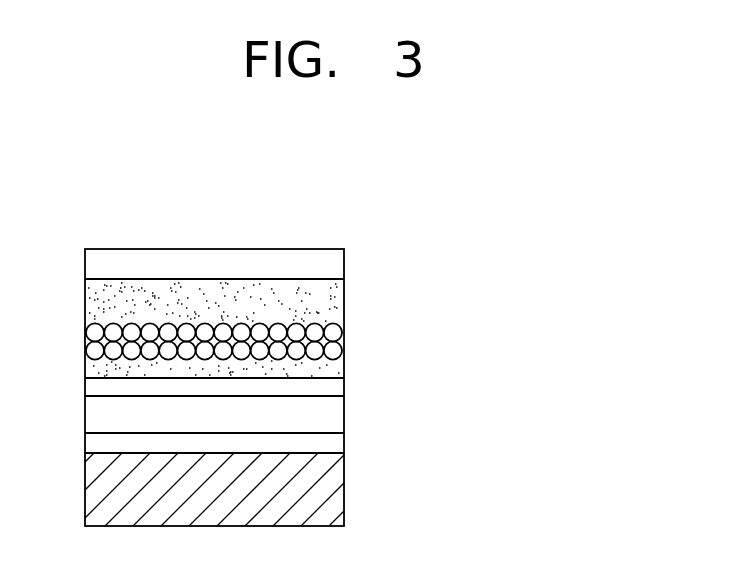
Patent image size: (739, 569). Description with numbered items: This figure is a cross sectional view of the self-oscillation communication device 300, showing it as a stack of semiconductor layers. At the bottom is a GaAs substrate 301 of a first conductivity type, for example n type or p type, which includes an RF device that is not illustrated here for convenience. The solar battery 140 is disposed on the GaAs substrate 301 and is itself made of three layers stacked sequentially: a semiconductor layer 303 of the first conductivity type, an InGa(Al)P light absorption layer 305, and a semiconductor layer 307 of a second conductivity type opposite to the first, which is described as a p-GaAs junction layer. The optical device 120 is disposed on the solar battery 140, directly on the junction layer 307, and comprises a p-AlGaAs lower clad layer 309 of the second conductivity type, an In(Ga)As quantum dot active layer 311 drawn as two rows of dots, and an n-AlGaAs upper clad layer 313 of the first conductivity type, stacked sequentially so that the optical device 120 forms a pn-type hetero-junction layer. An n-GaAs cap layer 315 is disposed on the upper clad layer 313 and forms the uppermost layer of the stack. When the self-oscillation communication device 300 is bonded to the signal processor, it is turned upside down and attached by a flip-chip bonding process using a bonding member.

The self-oscillation communication device 300 is at (282, 213).
The GaAs substrate 301 is at (332, 490).
The semiconductor layer of the first conductivity type 303 is at (337, 443).
The InGa(Al)P light absorption layer 305 is at (337, 416).
The semiconductor layer of the second conductivity type 307 is at (336, 390).
The lower clad layer 309 is at (337, 370).
The In(Ga)As quantum dot active layer 311 is at (337, 332).
The upper clad layer 313 is at (337, 302).
The n-GaAs cap layer 315 is at (336, 266).
The optical device 120 is at (443, 300).
The solar battery 140 is at (443, 392).